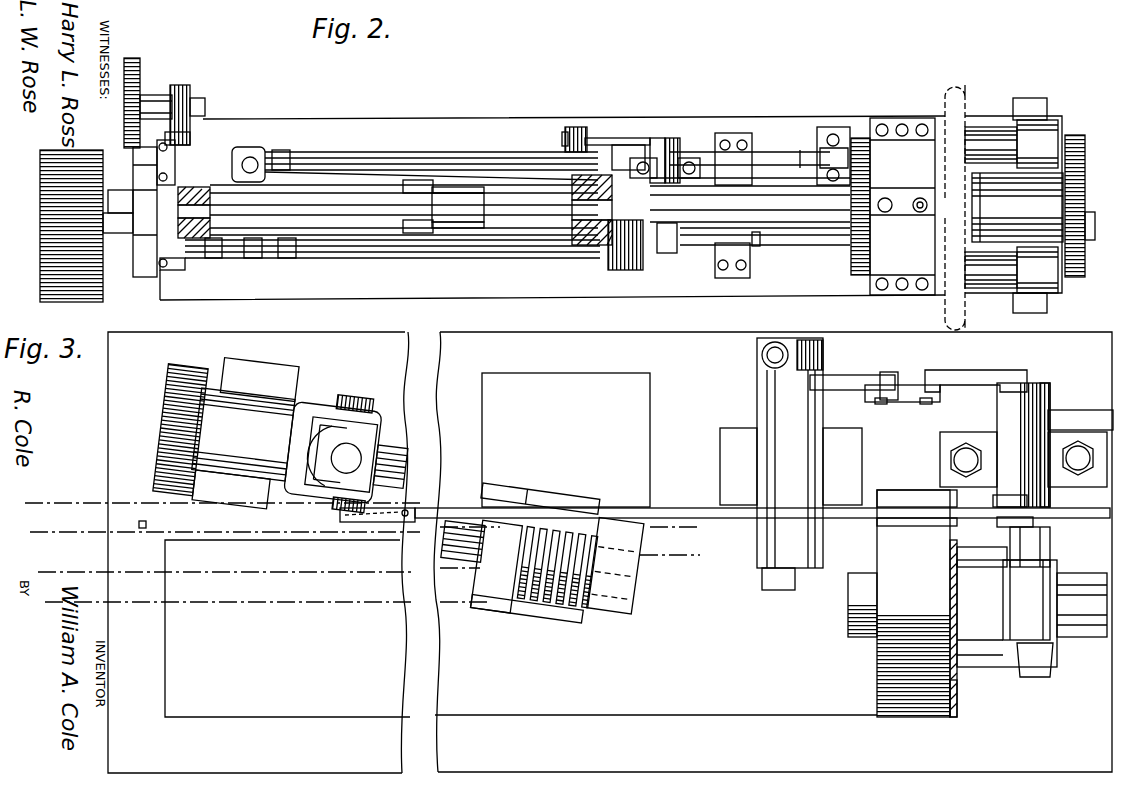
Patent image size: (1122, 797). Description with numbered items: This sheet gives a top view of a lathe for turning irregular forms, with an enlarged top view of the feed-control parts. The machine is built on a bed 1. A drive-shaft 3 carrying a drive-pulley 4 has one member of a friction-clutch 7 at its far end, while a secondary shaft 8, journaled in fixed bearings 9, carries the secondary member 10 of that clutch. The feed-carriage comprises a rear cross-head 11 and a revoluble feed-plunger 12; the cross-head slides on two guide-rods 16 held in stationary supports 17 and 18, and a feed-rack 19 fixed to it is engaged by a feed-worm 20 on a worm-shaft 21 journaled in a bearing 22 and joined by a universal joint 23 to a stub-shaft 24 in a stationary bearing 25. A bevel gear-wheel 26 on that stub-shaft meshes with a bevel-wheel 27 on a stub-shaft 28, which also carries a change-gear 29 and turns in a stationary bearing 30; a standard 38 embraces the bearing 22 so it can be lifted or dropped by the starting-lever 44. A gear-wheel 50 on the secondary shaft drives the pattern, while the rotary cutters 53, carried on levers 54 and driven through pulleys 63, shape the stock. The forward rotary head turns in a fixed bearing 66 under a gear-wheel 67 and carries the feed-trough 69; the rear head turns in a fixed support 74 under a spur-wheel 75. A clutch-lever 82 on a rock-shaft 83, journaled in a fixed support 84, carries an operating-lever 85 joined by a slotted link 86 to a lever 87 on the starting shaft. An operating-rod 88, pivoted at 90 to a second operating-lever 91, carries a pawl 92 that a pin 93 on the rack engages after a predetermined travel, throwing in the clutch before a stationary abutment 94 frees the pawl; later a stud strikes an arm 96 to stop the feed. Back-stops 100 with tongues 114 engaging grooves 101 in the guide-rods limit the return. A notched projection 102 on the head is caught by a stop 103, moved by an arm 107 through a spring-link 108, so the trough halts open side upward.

In FIG. 2, the bed 1 is at (760, 292).
In FIG. 3, the bed 1 is at (568, 552).
In FIG. 2, the drive-shaft 3 is at (120, 240).
In FIG. 3, the drive-shaft 3 is at (860, 637).
In FIG. 2, the drive-pulley 4 is at (46, 223).
In FIG. 2, the friction-clutch 7 is at (620, 270).
In FIG. 3, the friction-clutch 7 is at (917, 603).
In FIG. 2, the secondary shaft 8 is at (790, 240).
In FIG. 3, the secondary shaft 8 is at (1085, 637).
In FIG. 2, the fixed bearings 9 is at (756, 246).
In FIG. 3, the secondary member of the friction-clutch 10 is at (958, 695).
In FIG. 2, the rear cross-head 11 is at (145, 212).
In FIG. 2, the feed-plunger 12 is at (522, 205).
In FIG. 2, the guide-rods 16 is at (400, 163).
In FIG. 2, the stationary support 17 is at (194, 212).
In FIG. 2, the stationary support 18 is at (583, 248).
In FIG. 2, the feed-rack 19 is at (367, 222).
In FIG. 3, the feed-worm 20 is at (545, 612).
In FIG. 2, the worm-shaft 21 is at (340, 158).
In FIG. 3, the worm-shaft 21 is at (412, 452).
In FIG. 2, the bearing 22 is at (503, 235).
In FIG. 3, the bearing 22 is at (615, 566).
In FIG. 2, the universal joint 23 is at (252, 160).
In FIG. 3, the universal joint 23 is at (350, 440).
In FIG. 3, the stub-shaft 24 is at (305, 400).
In FIG. 3, the stationary bearing 25 is at (243, 432).
In FIG. 2, the bevel gear-wheel 26 is at (182, 142).
In FIG. 3, the bevel gear-wheel 26 is at (160, 410).
In FIG. 2, the bevel-wheel 27 is at (196, 98).
In FIG. 2, the stub-shaft 28 is at (176, 85).
In FIG. 2, the change-gear 29 is at (140, 62).
In FIG. 2, the stationary bearing 30 is at (152, 95).
In FIG. 3, the standard 38 is at (510, 492).
In FIG. 2, the starting-lever 44 is at (578, 127).
In FIG. 3, the starting-lever 44 is at (800, 340).
In FIG. 2, the gear-wheel 50 is at (718, 256).
In FIG. 2, the rotary cutters 53 is at (966, 100).
In FIG. 2, the levers 54 is at (991, 207).
In FIG. 2, the pulleys 63 is at (1035, 205).
In FIG. 2, the fixed bearing 66 is at (902, 206).
In FIG. 2, the gear-wheel 67 is at (850, 262).
In FIG. 2, the feed-trough 69 is at (750, 200).
In FIG. 2, the fixed support 74 is at (1017, 207).
In FIG. 2, the spur-wheel 75 is at (1078, 278).
In FIG. 2, the clutch-lever 82 is at (660, 255).
In FIG. 3, the clutch-lever 82 is at (1007, 612).
In FIG. 3, the rock-shaft 83 is at (1052, 553).
In FIG. 2, the fixed support 84 is at (675, 148).
In FIG. 3, the fixed support 84 is at (1023, 445).
In FIG. 2, the operating-lever 85 is at (656, 140).
In FIG. 3, the operating-lever 85 is at (980, 370).
In FIG. 2, the link 86 is at (625, 148).
In FIG. 3, the link 86 is at (895, 400).
In FIG. 2, the lever 87 is at (615, 138).
In FIG. 3, the lever 87 is at (840, 375).
In FIG. 3, the operating-rod 88 is at (673, 508).
In FIG. 3, the pivotal connection 90 is at (1036, 522).
In FIG. 3, the second operating-lever 91 is at (1030, 500).
In FIG. 3, the pawl 92 is at (348, 522).
In FIG. 3, the pin 93 is at (142, 528).
In FIG. 3, the stationary abutment 94 is at (404, 520).
In FIG. 2, the arm 96 is at (562, 140).
In FIG. 3, the arm 96 is at (757, 385).
In FIG. 2, the back-stops 100 is at (168, 152).
In FIG. 2, the grooves 101 is at (287, 152).
In FIG. 2, the notched projection 102 is at (820, 150).
In FIG. 2, the stop 103 is at (820, 165).
In FIG. 3, the arm 107 is at (1050, 400).
In FIG. 2, the spring-link 108 is at (700, 158).
In FIG. 3, the spring-link 108 is at (1068, 418).
In FIG. 2, the tongues 114 is at (170, 266).